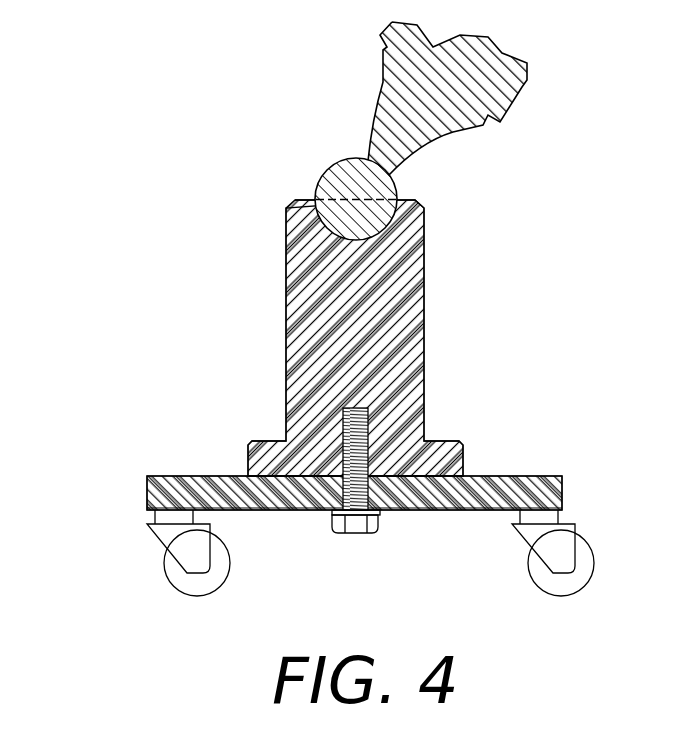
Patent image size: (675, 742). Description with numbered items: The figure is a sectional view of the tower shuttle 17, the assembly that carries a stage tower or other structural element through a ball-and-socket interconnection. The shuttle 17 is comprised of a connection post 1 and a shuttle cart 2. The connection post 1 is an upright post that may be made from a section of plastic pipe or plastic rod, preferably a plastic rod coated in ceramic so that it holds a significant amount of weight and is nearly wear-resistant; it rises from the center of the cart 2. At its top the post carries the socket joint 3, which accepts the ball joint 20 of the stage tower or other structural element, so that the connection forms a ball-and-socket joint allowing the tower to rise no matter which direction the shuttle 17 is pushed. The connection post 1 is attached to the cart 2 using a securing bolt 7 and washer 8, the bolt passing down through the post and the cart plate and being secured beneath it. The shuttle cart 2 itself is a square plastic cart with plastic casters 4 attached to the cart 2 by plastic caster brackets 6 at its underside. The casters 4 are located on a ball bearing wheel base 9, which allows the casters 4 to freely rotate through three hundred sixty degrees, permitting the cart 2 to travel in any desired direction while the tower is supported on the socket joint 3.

The connection post 1 is at (425, 230).
The shuttle cart 2 is at (522, 482).
The socket joint 3 is at (317, 212).
The caster 4 is at (197, 587).
The caster bracket 6 is at (172, 542).
The securing bolt 7 is at (357, 528).
The washer 8 is at (332, 513).
The ball bearing wheel base 9 is at (550, 518).
The tower shuttle 17 is at (133, 316).
The ball joint 20 is at (452, 134).